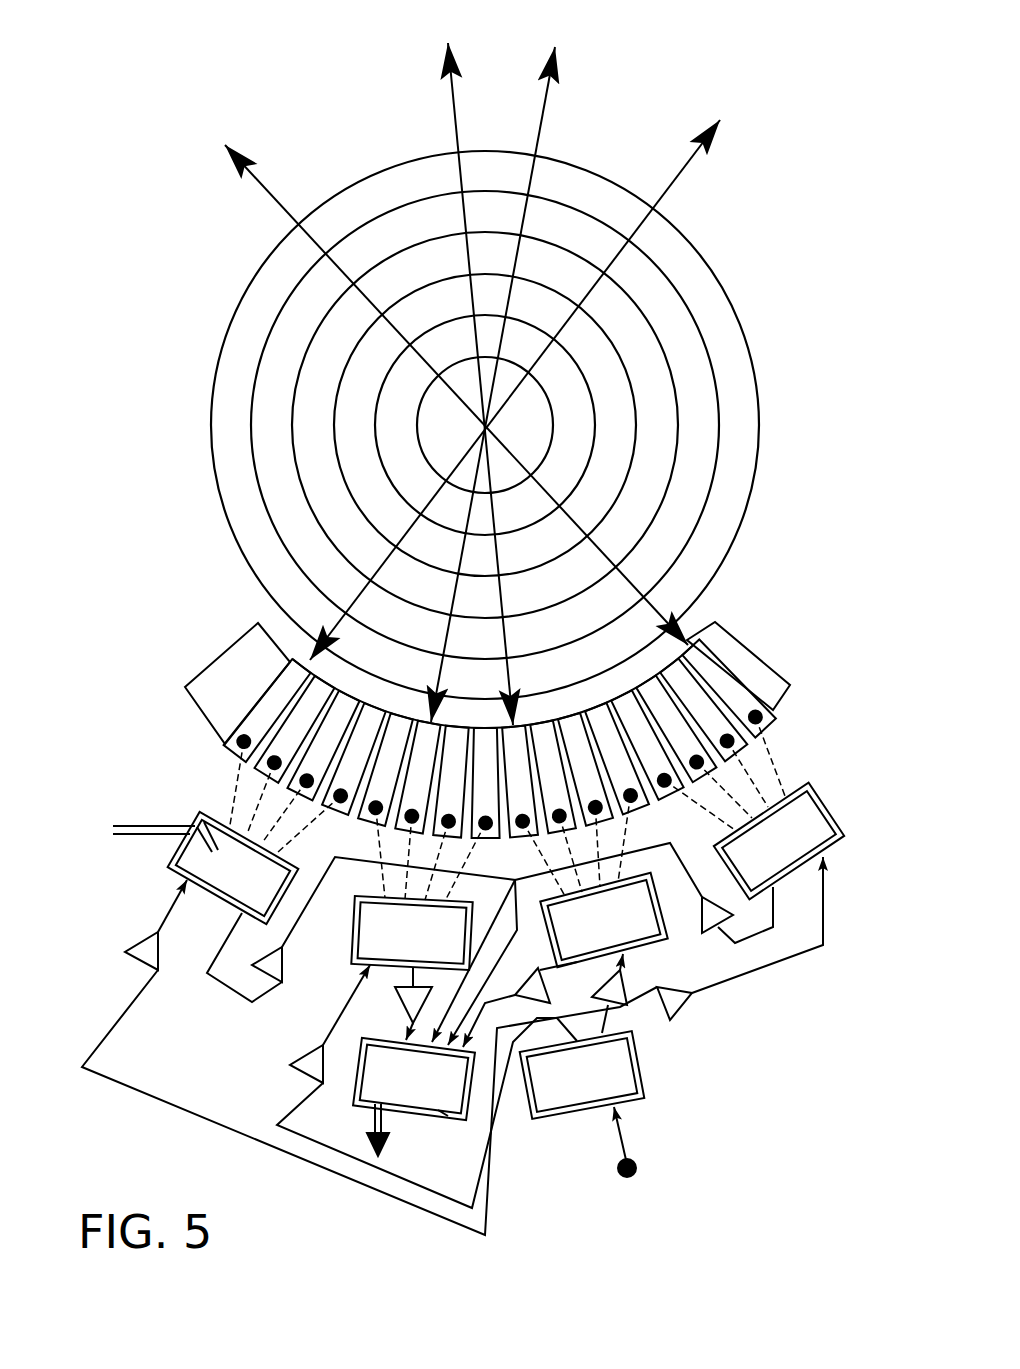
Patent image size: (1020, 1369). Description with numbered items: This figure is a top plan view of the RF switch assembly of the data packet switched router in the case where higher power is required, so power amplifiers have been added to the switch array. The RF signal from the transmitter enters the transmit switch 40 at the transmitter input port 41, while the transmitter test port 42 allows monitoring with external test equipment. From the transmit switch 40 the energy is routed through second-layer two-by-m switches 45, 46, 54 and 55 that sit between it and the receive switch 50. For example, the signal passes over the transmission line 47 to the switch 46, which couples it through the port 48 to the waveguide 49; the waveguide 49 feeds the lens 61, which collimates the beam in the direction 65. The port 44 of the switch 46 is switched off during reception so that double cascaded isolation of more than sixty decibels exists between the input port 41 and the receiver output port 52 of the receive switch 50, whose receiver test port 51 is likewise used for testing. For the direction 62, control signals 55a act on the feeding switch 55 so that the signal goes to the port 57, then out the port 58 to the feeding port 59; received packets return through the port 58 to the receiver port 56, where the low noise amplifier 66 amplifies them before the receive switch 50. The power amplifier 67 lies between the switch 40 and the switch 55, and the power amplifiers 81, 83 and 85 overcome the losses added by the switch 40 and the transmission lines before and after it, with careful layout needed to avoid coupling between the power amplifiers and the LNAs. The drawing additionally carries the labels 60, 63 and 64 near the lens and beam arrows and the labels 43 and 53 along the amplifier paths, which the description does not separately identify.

The transmit switch 40 is at (636, 1070).
The transmitter input port 41 is at (634, 1165).
The transmitter test port 42 is at (592, 1111).
The amplifier 43 is at (607, 1018).
The port of switch 46 44 is at (823, 908).
The 2×m switch 45 is at (642, 908).
The 2×m switch 46 is at (820, 818).
The transmission line 47 is at (735, 943).
The port of switch 46 48 is at (773, 752).
The waveguide feeding port 49 is at (730, 678).
The receive switch 50 is at (390, 1055).
The receiver test port 51 is at (442, 1118).
The receiver output port 52 is at (373, 1115).
The signal line 53 is at (343, 1008).
The 2×m switch 54 is at (353, 924).
The feeding switch 55 is at (172, 862).
The control signals 55a is at (140, 826).
The receiver port of switch 55 56 is at (233, 926).
The port of switch 55 57 is at (173, 908).
The port of switch 55 58 is at (233, 784).
The feeding port 59 is at (258, 710).
The target rings 60 is at (733, 292).
The lens 61 is at (706, 258).
The direction 62 is at (533, 371).
The beam axis 63 is at (502, 364).
The beam axis 64 is at (472, 364).
The direction 65 is at (437, 379).
The low noise amplifier 66 is at (288, 965).
The power amplifier 67 is at (160, 966).
The power amplifier 81 is at (677, 1016).
The power amplifier 83 is at (627, 988).
The power amplifier 85 is at (302, 1050).